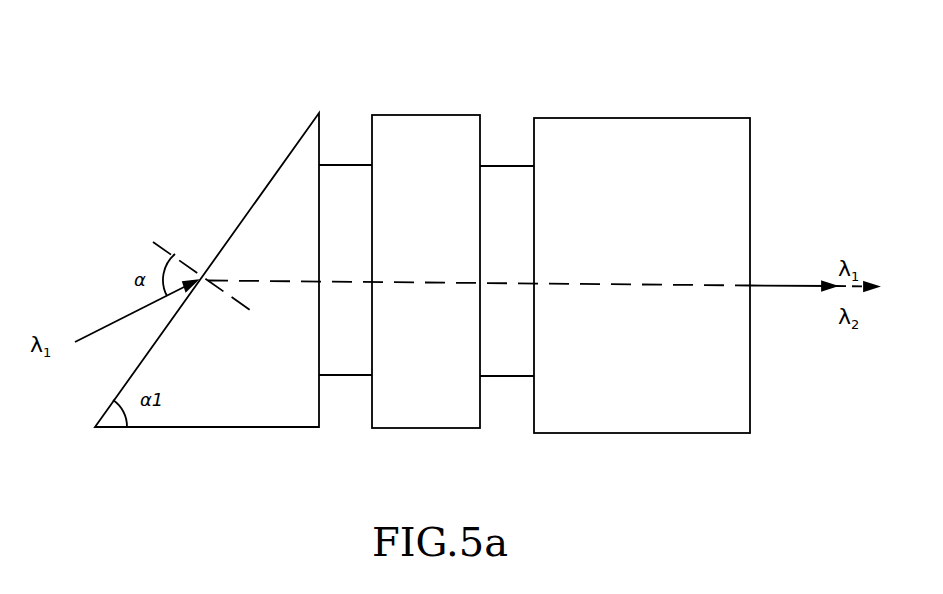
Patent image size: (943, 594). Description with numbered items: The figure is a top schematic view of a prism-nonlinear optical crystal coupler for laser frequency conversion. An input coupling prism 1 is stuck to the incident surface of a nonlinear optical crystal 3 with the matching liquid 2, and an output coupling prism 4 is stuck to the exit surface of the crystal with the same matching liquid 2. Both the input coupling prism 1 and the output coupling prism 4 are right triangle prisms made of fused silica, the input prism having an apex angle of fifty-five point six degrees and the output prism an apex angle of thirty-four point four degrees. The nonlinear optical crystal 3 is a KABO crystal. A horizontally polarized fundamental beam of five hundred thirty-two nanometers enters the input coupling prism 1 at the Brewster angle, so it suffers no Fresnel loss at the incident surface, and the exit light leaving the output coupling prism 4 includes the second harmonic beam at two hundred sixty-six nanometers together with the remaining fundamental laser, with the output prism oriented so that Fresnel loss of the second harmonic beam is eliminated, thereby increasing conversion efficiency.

The input coupling prism 1 is at (275, 225).
The matching liquid 2 is at (426, 196).
The nonlinear optical crystal 3 is at (415, 165).
The output coupling prism 4 is at (670, 160).